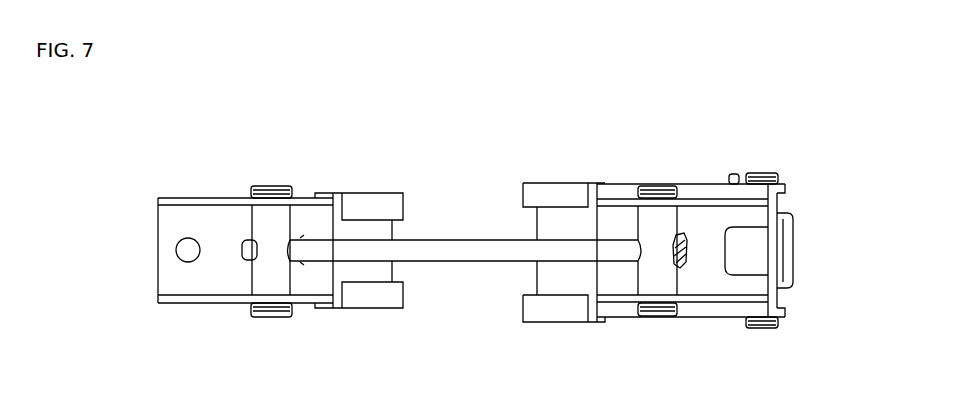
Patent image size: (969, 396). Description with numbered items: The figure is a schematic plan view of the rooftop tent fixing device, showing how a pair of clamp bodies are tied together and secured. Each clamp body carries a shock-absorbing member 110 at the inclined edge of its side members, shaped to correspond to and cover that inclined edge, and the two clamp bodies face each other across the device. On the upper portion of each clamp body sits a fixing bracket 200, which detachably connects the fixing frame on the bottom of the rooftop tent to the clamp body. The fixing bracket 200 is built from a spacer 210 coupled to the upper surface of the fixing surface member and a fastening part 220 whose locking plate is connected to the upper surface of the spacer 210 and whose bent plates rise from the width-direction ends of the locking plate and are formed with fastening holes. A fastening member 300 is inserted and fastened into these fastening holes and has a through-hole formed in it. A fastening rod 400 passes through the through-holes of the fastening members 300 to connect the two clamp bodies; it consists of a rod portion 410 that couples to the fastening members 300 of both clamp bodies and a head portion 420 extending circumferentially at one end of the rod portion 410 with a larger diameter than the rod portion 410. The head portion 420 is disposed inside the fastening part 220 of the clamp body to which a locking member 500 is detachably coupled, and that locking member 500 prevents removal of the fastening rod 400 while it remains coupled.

The shock-absorbing member 110 is at (375, 302).
The fixing bracket 200 is at (100, 182).
The spacer 210 is at (165, 247).
The fastening part 220 is at (157, 198).
The fastening member 300 is at (274, 212).
The fastening rod 400 is at (560, 122).
The rod portion 410 is at (558, 242).
The head portion 420 is at (683, 243).
The locking member 500 is at (763, 256).